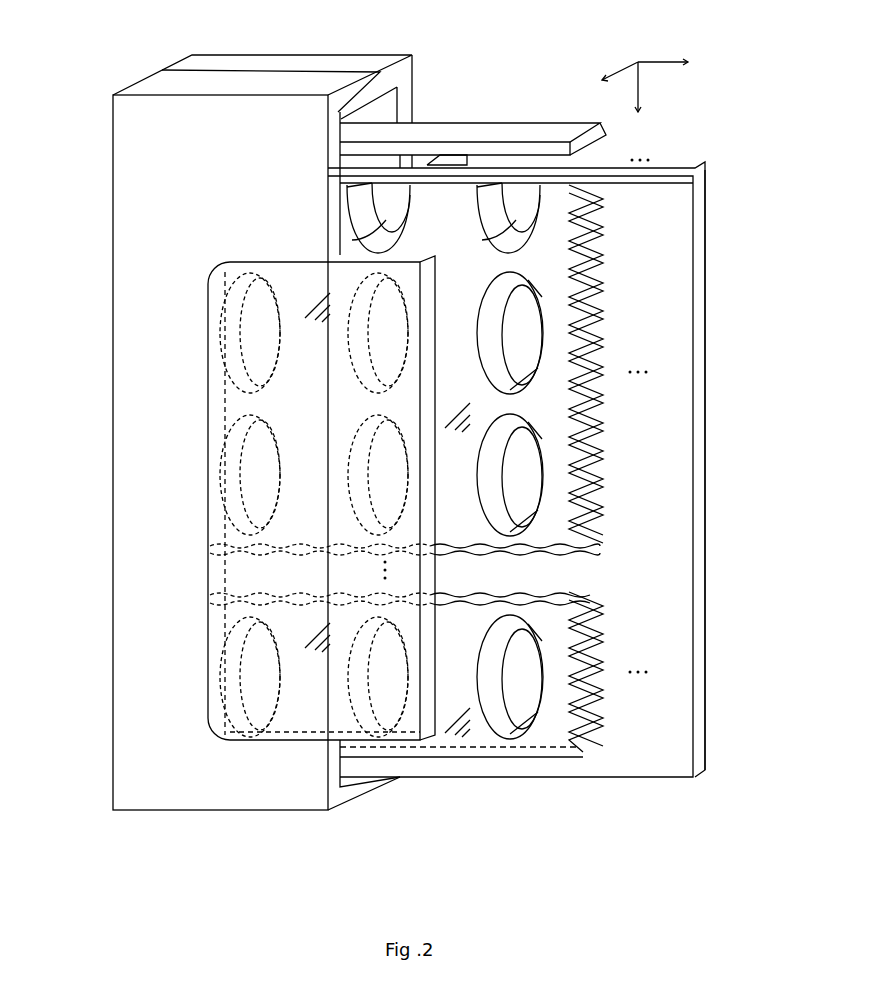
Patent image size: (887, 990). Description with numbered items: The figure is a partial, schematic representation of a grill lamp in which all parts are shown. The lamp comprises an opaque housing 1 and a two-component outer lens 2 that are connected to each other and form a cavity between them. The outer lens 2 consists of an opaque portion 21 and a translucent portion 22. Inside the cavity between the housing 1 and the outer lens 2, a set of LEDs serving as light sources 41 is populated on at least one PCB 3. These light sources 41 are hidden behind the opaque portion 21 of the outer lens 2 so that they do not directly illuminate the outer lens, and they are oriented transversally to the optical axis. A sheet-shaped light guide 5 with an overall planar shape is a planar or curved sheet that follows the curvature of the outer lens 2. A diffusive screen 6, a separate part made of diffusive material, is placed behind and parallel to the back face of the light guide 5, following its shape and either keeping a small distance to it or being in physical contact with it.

The opaque housing 1 is at (53, 722).
The outer lens 2 is at (350, 802).
The PCB 3 is at (450, 157).
The light sources 41 is at (452, 158).
The light guide 5 is at (603, 453).
The diffusive screen 6 is at (710, 279).
The opaque portion 21 is at (152, 140).
The translucent portion 22 is at (295, 330).